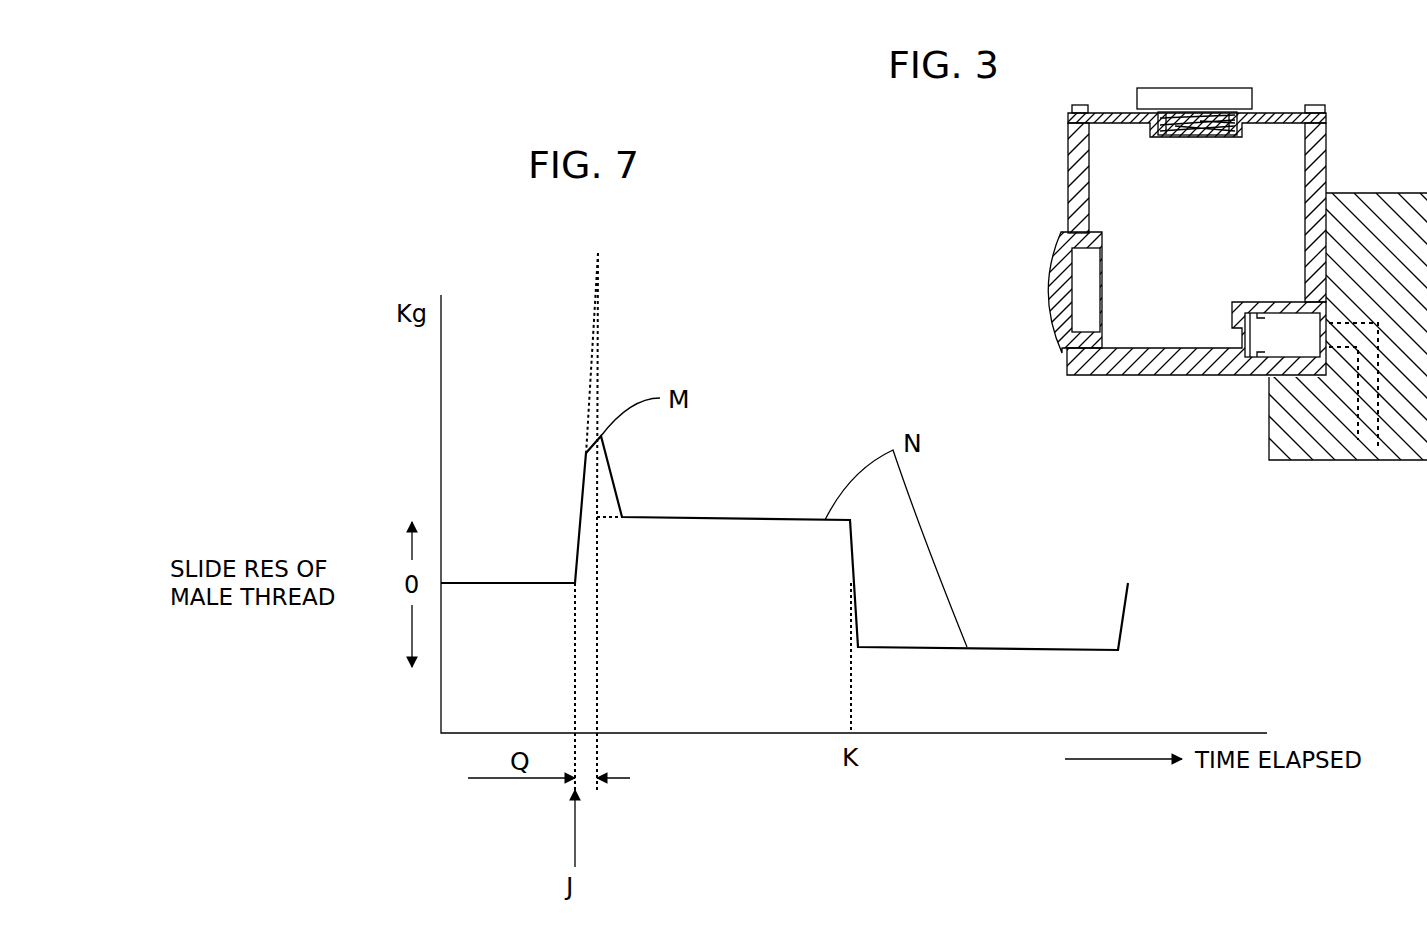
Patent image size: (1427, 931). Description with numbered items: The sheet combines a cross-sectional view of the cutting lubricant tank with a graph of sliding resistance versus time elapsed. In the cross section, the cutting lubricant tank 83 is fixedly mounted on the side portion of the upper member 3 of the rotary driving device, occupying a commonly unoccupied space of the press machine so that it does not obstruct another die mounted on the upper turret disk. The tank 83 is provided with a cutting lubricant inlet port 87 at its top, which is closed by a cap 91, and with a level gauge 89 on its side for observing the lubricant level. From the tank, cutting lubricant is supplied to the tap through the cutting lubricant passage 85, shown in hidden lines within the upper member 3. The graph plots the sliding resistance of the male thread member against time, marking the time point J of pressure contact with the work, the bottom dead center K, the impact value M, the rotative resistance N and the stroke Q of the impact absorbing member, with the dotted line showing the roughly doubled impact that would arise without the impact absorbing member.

The upper member 3 is at (1373, 163).
The cutting lubricant tank 83 is at (1067, 160).
The cutting lubricant passage 85 is at (1378, 405).
The cutting lubricant inlet port 87 is at (1162, 137).
The level gauge 89 is at (1047, 300).
The cap 91 is at (1227, 63).